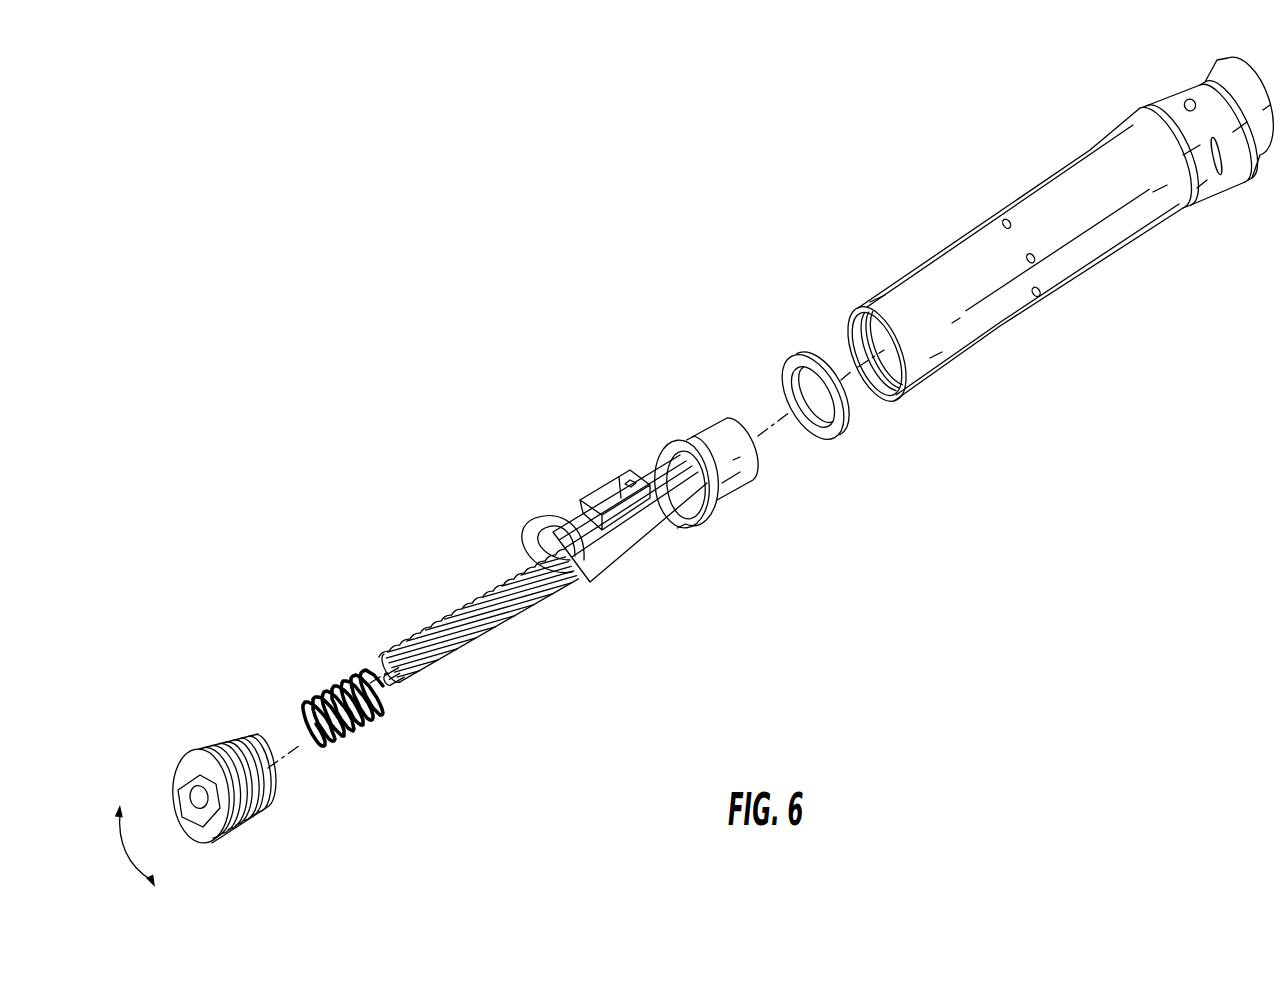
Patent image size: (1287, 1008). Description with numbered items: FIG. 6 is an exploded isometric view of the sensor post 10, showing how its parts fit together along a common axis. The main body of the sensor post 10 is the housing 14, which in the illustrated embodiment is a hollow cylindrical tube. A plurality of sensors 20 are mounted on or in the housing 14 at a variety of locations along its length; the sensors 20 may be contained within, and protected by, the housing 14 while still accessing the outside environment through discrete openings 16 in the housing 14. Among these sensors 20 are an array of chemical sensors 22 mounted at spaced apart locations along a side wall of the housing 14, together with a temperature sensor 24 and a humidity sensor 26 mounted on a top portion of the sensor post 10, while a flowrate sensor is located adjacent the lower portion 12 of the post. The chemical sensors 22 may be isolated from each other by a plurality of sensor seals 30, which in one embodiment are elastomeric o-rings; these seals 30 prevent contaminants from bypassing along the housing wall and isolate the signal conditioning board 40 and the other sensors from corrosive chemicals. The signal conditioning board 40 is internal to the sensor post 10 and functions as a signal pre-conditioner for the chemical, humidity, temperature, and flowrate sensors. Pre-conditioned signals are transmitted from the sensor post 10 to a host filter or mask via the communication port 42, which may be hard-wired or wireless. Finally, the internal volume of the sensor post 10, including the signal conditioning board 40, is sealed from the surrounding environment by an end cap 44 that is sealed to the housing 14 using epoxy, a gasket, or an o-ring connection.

The sensor post 10 is at (600, 147).
The lower portion 12 is at (253, 766).
The housing 14 is at (1054, 246).
The discrete openings 16 is at (1050, 272).
The sensors 20 is at (587, 460).
The chemical sensors 22 is at (600, 478).
The temperature sensor 24 is at (694, 430).
The humidity sensor 26 is at (706, 424).
The sensor seals 30 is at (1200, 67).
The signal conditioning board 40 is at (616, 512).
The communication port 42 is at (490, 632).
The end cap 44 is at (278, 797).